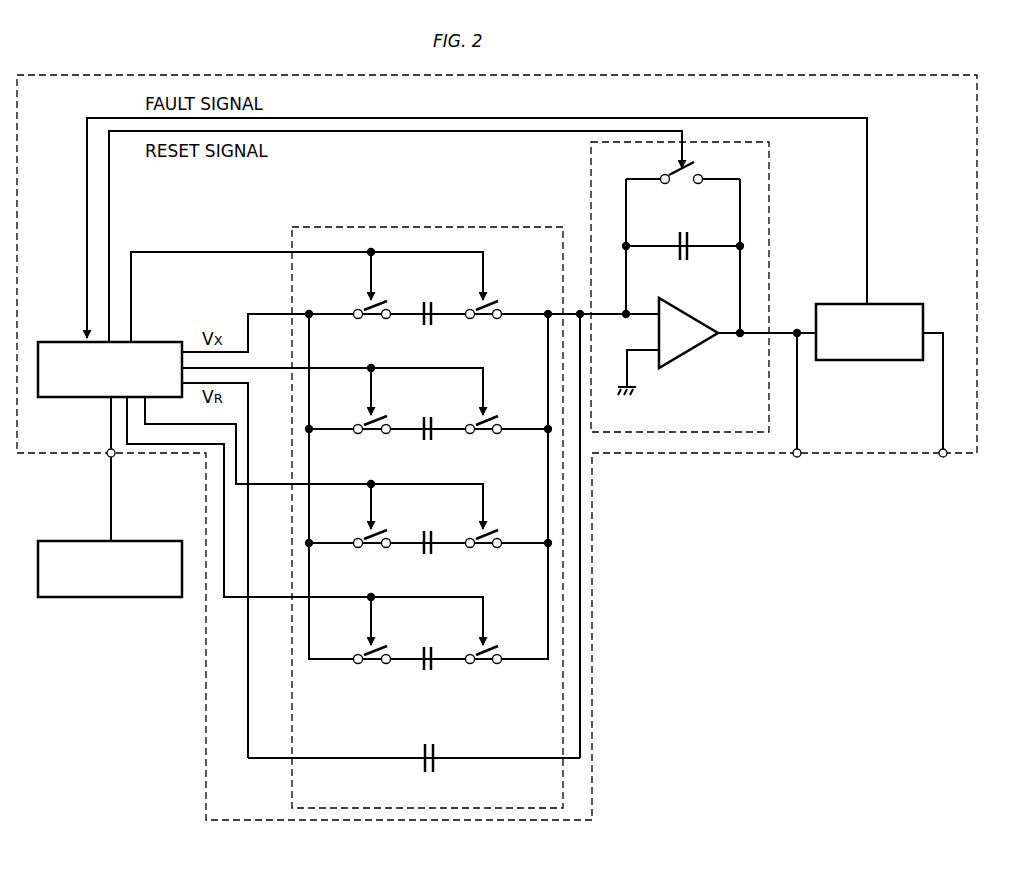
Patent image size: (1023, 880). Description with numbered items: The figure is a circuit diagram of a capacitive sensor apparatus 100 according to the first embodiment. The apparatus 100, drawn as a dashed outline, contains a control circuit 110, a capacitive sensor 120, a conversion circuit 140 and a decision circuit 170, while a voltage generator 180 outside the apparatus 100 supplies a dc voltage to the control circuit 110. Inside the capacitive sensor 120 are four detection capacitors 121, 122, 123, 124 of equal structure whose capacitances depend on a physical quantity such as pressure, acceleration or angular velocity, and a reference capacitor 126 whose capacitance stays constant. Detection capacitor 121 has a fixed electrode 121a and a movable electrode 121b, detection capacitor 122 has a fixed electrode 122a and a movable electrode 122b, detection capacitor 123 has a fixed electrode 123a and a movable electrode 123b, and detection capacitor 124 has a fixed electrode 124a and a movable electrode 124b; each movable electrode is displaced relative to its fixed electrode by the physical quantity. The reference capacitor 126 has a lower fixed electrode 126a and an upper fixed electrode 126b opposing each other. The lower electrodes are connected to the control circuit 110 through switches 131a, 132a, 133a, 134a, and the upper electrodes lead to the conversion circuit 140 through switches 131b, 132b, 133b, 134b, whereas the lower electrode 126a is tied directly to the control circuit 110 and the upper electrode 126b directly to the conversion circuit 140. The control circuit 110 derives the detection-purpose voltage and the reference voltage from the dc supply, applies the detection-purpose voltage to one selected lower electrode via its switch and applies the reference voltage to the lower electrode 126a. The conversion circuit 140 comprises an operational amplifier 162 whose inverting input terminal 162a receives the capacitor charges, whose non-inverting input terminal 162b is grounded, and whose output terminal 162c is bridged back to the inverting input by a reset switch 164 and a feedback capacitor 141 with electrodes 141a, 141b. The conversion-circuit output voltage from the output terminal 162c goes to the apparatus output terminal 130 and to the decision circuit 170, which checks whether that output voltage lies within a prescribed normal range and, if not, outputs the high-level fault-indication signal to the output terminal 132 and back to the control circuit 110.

The capacitive sensor apparatus 100 is at (866, 75).
The control circuit 110 is at (148, 342).
The capacitive sensor 120 is at (532, 227).
The detection capacitor 121 is at (430, 311).
The fixed electrode 121a is at (423, 325).
The movable electrode 121b is at (432, 325).
The detection capacitor 122 is at (430, 426).
The fixed electrode 122a is at (423, 440).
The movable electrode 122b is at (432, 440).
The detection capacitor 123 is at (430, 540).
The fixed electrode 123a is at (423, 554).
The movable electrode 123b is at (432, 554).
The detection capacitor 124 is at (430, 656).
The fixed electrode 124a is at (423, 670).
The movable electrode 124b is at (432, 670).
The reference capacitor 126 is at (414, 751).
The lower fixed electrode 126a is at (424, 772).
The upper fixed electrode 126b is at (434, 772).
The switch 131a is at (368, 323).
The switch 131b is at (487, 322).
The switch 132a is at (368, 438).
The switch 132b is at (487, 437).
The switch 133a is at (368, 552).
The switch 133b is at (487, 551).
The switch 134a is at (368, 668).
The switch 134b is at (487, 667).
The conversion circuit 140 is at (773, 190).
The feedback capacitor 141 is at (683, 244).
The electrode of feedback capacitor 141a is at (679, 260).
The electrode of feedback capacitor 141b is at (688, 260).
The operational amplifier 162 is at (698, 354).
The inverting input terminal 162a is at (652, 320).
The non-inverting input terminal 162b is at (662, 360).
The output terminal 162c is at (730, 337).
The reset switch 164 is at (667, 166).
The decision circuit 170 is at (894, 304).
The output terminal 130 is at (802, 449).
The output terminal 132 is at (940, 449).
The voltage generator 180 is at (152, 541).